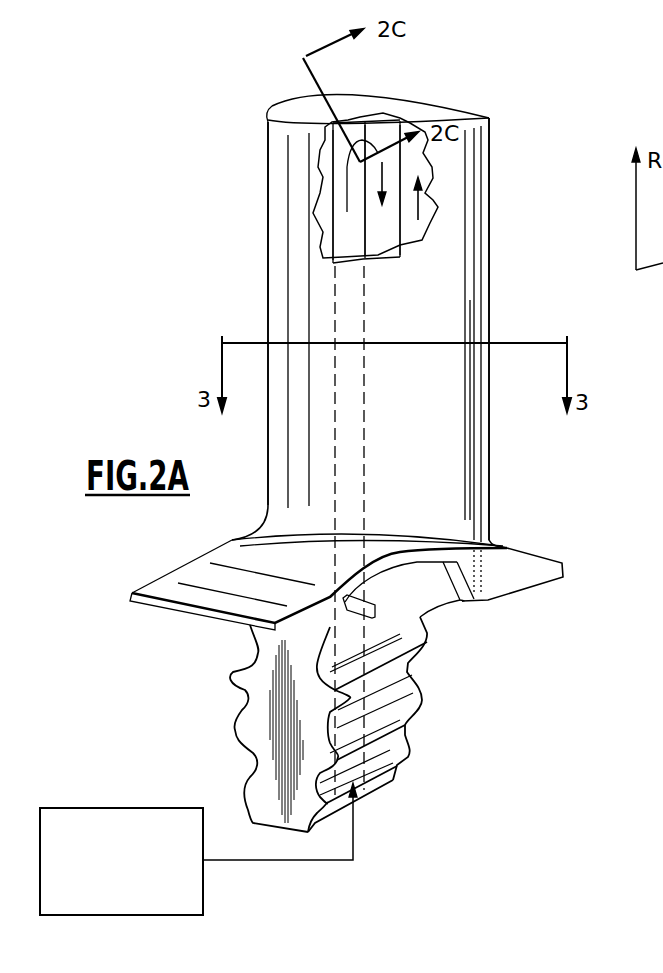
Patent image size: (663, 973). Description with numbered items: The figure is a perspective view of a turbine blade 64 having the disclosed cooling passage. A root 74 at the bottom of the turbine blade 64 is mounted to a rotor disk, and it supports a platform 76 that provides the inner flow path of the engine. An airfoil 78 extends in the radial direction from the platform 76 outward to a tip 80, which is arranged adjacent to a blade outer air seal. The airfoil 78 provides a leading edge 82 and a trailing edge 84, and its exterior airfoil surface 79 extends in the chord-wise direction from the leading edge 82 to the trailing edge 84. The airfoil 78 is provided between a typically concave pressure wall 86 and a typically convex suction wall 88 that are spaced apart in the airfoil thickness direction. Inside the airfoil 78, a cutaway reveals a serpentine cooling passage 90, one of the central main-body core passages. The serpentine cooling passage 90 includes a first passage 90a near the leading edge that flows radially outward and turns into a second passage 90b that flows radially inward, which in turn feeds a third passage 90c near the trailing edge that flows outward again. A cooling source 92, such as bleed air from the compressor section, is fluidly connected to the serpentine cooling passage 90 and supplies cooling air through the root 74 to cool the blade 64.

The turbine blade 64 is at (230, 278).
The root 74 is at (273, 733).
The platform 76 is at (383, 543).
The airfoil 78 is at (441, 420).
The exterior airfoil surface 79 is at (450, 460).
The tip 80 is at (287, 102).
The leading edge 82 is at (267, 280).
The trailing edge 84 is at (490, 267).
The pressure wall 86 is at (405, 328).
The suction wall 88 is at (412, 86).
The serpentine cooling passage 90 is at (449, 201).
The first passage 90a is at (347, 230).
The second passage 90b is at (387, 238).
The third passage 90c is at (430, 180).
The cooling source 92 is at (115, 808).